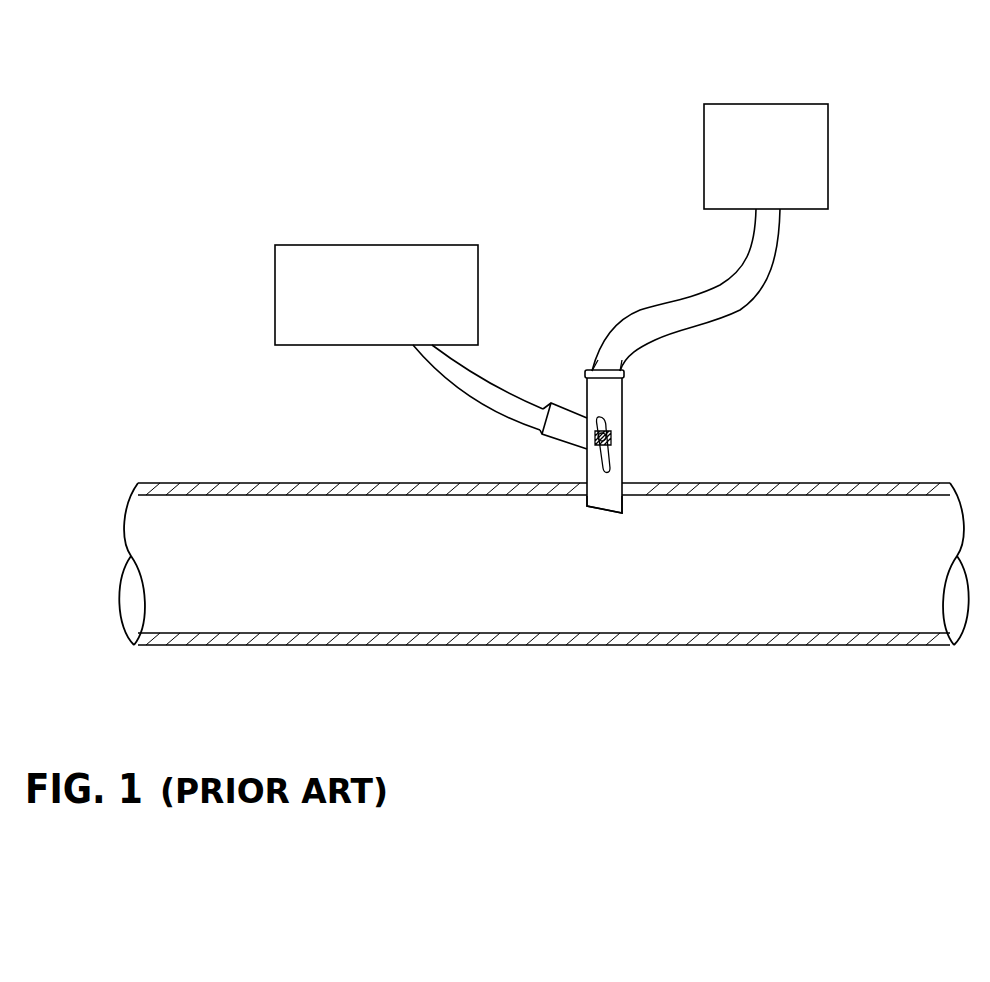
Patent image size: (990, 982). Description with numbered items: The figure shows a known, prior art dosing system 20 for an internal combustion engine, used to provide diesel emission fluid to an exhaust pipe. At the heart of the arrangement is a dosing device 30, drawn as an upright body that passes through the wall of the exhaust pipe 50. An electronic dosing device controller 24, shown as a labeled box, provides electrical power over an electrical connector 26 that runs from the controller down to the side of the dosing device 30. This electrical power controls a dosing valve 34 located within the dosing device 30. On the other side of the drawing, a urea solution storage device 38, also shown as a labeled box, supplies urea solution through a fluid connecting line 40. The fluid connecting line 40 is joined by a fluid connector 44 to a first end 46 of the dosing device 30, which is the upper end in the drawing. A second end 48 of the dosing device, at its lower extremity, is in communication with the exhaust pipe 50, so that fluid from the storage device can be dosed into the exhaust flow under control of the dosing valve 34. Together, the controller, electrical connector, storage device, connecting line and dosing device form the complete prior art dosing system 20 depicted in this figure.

The dosing system 20 is at (427, 133).
The electronic dosing device controller 24 is at (322, 245).
The electrical connector 26 is at (450, 392).
The dosing device 30 is at (620, 458).
The dosing valve 34 is at (604, 443).
The urea solution storage device 38 is at (828, 166).
The fluid connecting line 40 is at (757, 300).
The fluid connector 44 is at (622, 355).
The first end 46 is at (612, 378).
The second end 48 is at (588, 503).
The exhaust pipe 50 is at (826, 492).